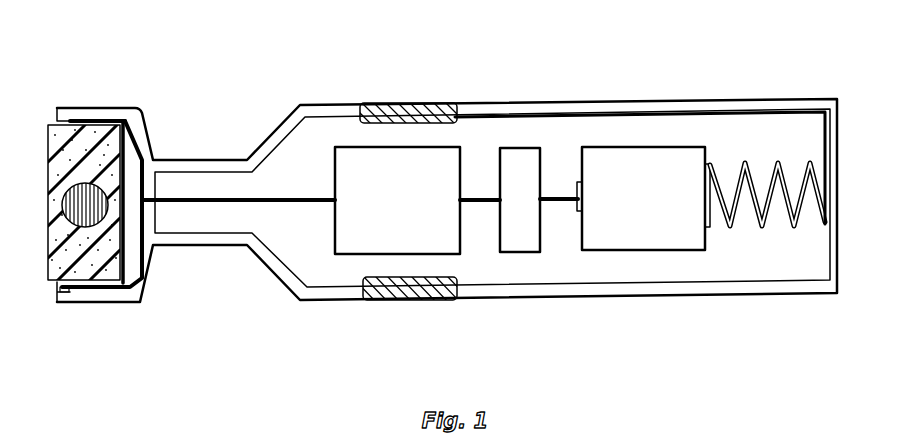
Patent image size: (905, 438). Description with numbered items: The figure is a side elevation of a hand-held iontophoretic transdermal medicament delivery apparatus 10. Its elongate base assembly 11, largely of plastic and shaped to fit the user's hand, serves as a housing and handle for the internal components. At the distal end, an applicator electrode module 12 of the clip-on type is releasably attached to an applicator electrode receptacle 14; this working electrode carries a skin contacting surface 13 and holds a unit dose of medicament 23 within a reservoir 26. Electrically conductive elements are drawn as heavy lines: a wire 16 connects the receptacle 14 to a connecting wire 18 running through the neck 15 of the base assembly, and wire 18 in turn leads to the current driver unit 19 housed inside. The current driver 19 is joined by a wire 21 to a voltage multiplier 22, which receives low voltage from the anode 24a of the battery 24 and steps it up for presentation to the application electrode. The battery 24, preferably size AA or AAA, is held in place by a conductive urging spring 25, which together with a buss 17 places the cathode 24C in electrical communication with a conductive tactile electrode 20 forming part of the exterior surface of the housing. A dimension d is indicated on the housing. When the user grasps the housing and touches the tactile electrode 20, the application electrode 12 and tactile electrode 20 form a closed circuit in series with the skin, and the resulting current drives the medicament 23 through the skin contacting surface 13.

The iontophoretic transdermal medicament delivery apparatus 10 is at (575, 43).
The base assembly 11 is at (662, 100).
The applicator electrode module 12 is at (128, 117).
The skin contacting surface 13 is at (48, 237).
The applicator electrode receptacle 14 is at (102, 108).
The neck 15 is at (220, 246).
The wire 16 is at (139, 148).
The buss 17 is at (600, 114).
The connecting wire 18 is at (287, 204).
The current driver unit 19 is at (397, 200).
The tactile electrode 20 is at (386, 102).
The wire 21 is at (485, 203).
The voltage multiplier 22 is at (520, 200).
The medicament 23 is at (67, 292).
The battery 24 is at (643, 198).
The anode 24a is at (580, 212).
The cathode 24C is at (704, 232).
The conductive urging spring 25 is at (744, 162).
The reservoir 26 is at (115, 296).
The distance d is at (530, 330).